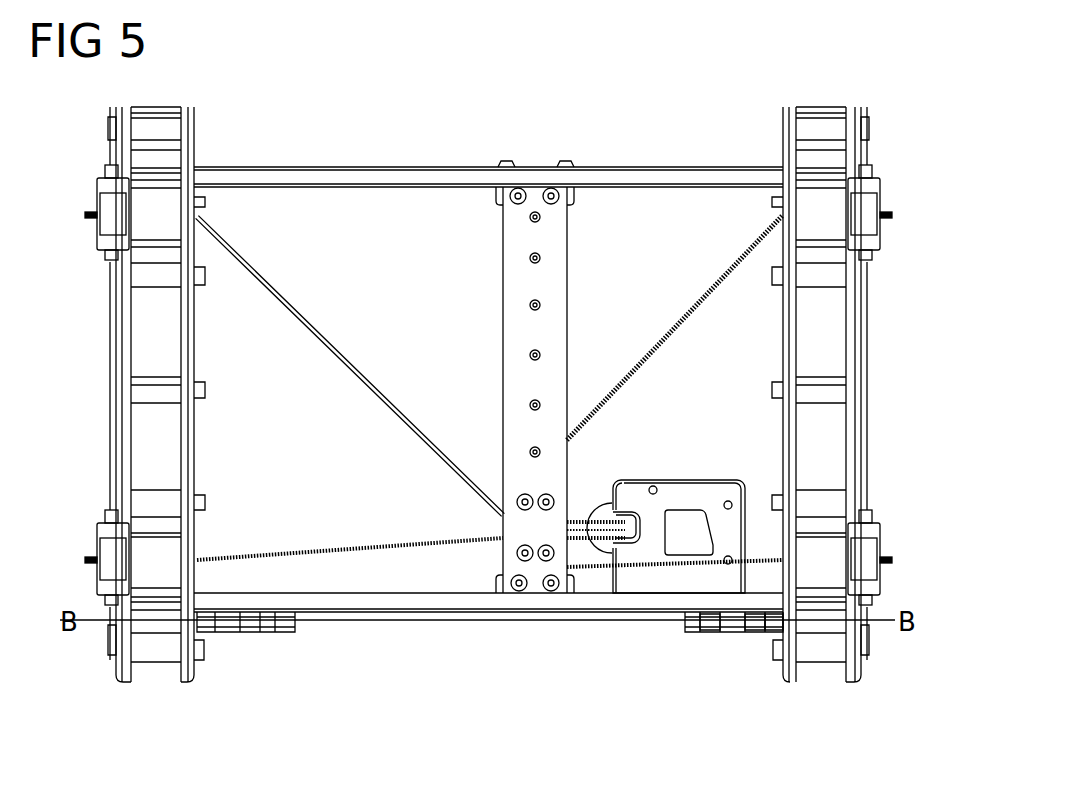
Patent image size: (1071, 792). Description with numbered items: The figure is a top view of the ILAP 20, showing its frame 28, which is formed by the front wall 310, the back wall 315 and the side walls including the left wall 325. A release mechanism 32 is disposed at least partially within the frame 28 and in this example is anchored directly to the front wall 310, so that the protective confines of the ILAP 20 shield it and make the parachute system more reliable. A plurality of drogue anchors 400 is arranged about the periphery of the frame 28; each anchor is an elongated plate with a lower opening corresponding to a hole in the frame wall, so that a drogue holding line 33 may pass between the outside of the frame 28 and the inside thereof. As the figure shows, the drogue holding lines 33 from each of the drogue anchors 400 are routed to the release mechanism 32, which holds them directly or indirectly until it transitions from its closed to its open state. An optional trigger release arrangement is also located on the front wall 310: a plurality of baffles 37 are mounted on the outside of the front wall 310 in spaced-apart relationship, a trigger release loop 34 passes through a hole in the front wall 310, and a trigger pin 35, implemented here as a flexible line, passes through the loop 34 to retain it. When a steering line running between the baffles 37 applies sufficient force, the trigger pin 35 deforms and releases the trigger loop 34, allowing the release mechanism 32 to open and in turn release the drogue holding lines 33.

The ILAP 20 is at (474, 175).
The frame 28 is at (328, 663).
The release mechanism 32 is at (662, 568).
The drogue holding lines 33 is at (263, 262).
The trigger release loop 34 is at (708, 632).
The trigger pin 35 is at (752, 630).
The baffles 37 is at (778, 628).
The front wall 310 is at (375, 600).
The back wall 315 is at (372, 152).
The left wall 325 is at (120, 350).
The drogue anchors 400 is at (95, 163).